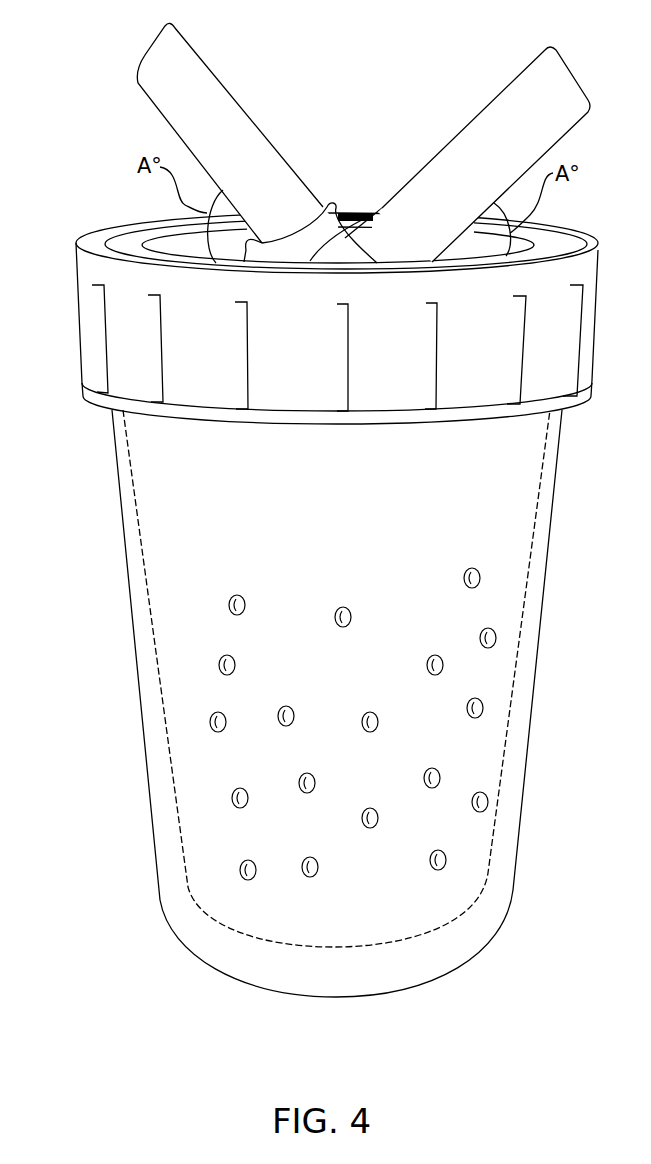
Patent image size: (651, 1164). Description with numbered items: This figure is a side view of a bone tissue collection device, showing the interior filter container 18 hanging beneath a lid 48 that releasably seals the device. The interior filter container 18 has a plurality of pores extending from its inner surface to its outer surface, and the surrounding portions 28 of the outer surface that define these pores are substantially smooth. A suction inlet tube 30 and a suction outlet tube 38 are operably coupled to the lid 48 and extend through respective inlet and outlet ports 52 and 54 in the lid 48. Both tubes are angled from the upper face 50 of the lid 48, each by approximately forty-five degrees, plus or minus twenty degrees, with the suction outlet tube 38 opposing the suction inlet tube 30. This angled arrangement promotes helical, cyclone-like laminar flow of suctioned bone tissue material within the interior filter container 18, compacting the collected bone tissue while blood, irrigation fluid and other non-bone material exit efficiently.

The interior filter container 18 is at (527, 582).
The surrounding portions of outer surface 28 is at (483, 682).
The suction inlet tube 30 is at (234, 100).
The suction outlet tube 38 is at (496, 98).
The lid 48 is at (83, 313).
The upper face 50 is at (115, 230).
The inlet port 52 is at (333, 217).
The outlet port 54 is at (362, 220).